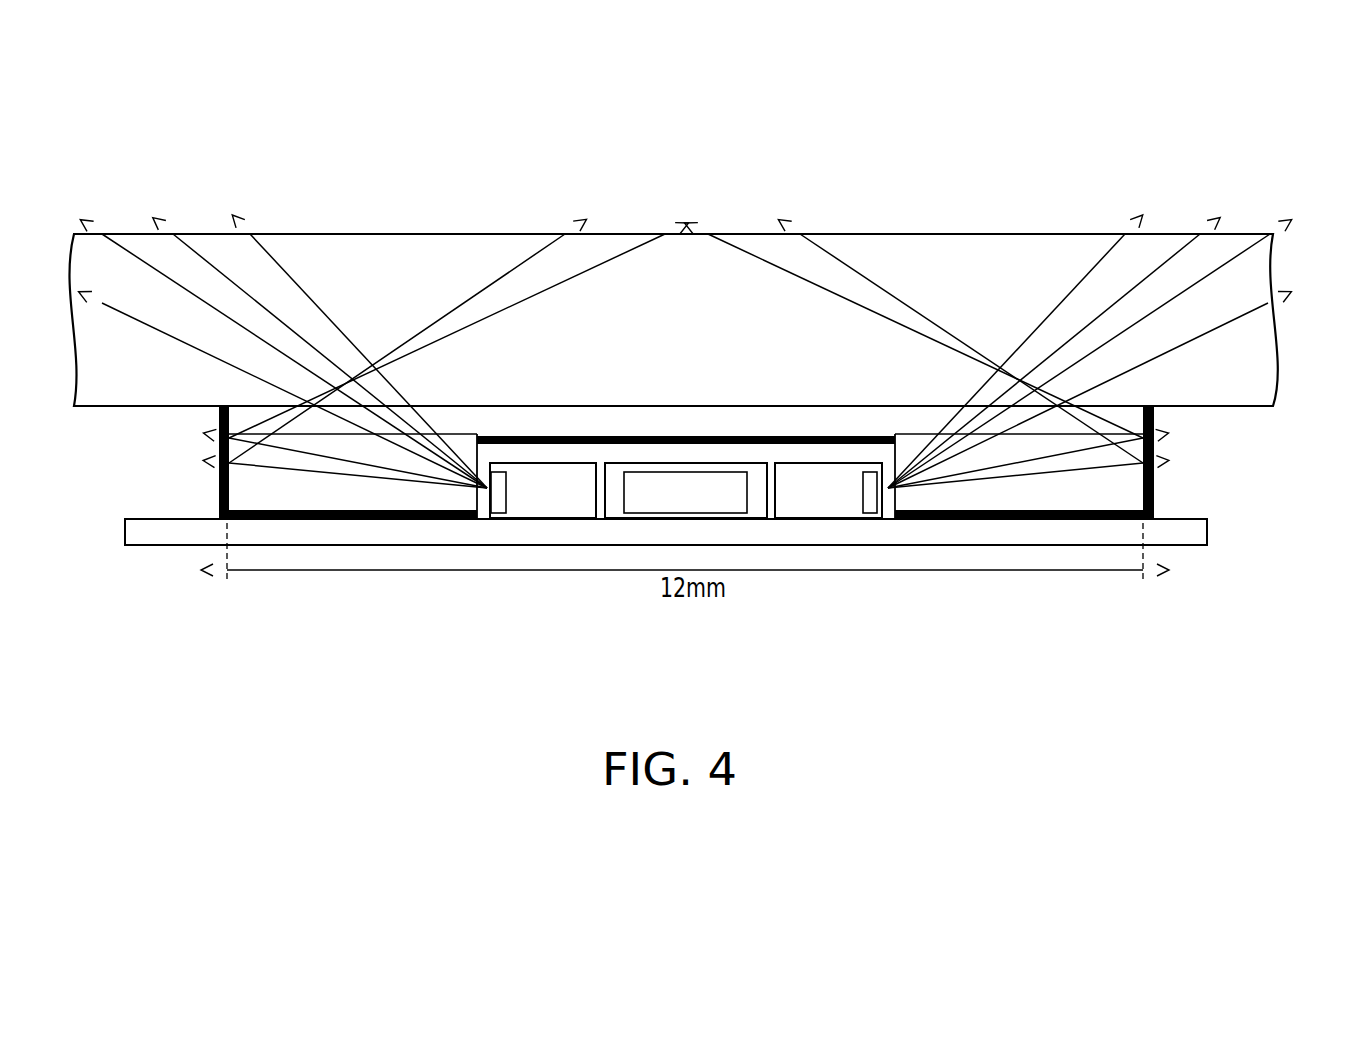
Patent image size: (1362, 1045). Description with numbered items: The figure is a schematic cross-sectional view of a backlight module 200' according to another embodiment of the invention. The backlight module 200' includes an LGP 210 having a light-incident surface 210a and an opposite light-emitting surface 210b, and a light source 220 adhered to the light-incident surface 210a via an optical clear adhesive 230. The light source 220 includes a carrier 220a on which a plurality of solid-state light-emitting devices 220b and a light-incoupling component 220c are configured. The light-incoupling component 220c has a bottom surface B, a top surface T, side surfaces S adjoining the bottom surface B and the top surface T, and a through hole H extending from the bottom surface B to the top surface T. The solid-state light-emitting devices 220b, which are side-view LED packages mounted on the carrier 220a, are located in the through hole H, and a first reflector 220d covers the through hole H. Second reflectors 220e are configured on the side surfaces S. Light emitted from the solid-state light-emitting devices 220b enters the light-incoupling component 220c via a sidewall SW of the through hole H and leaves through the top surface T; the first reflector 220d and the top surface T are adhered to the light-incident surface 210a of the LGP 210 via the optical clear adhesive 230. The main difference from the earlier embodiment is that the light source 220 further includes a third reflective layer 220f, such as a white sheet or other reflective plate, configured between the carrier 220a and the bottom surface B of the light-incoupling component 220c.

The backlight module 200' is at (673, 475).
The LGP 210 is at (1255, 273).
The light-incident surface 210a is at (1237, 407).
The light-emitting surface 210b is at (1228, 233).
The light source 220 is at (666, 548).
The carrier 220a is at (195, 537).
The solid-state light-emitting devices 220b is at (686, 556).
The light-incoupling component 220c is at (324, 495).
The first reflector 220d is at (827, 445).
The second reflectors 220e is at (219, 490).
The third reflective layer 220f is at (408, 517).
The optical clear adhesive 230 is at (479, 425).
The through hole H is at (753, 452).
The top surface T is at (900, 435).
The sidewall SW is at (901, 449).
The bottom surface B is at (995, 511).
The side surfaces S is at (1118, 521).